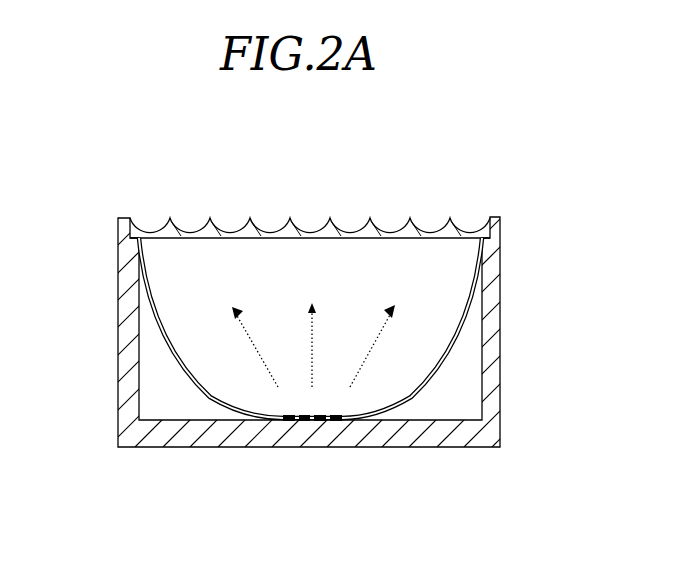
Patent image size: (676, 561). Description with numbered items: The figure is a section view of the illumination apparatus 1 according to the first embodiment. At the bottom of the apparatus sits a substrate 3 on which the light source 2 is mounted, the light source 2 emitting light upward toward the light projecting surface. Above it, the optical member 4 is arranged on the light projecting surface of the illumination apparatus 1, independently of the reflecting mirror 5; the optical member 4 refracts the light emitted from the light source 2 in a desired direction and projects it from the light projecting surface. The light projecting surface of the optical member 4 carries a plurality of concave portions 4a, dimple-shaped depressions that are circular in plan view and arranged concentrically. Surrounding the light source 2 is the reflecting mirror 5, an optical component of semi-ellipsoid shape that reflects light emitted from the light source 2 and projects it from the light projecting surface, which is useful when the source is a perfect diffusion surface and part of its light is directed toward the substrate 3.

The illumination apparatus 1 is at (450, 203).
The light source 2 is at (322, 421).
The substrate 3 is at (397, 422).
The optical member 4 is at (130, 234).
The concave portions 4a is at (272, 227).
The reflecting mirror 5 is at (461, 323).